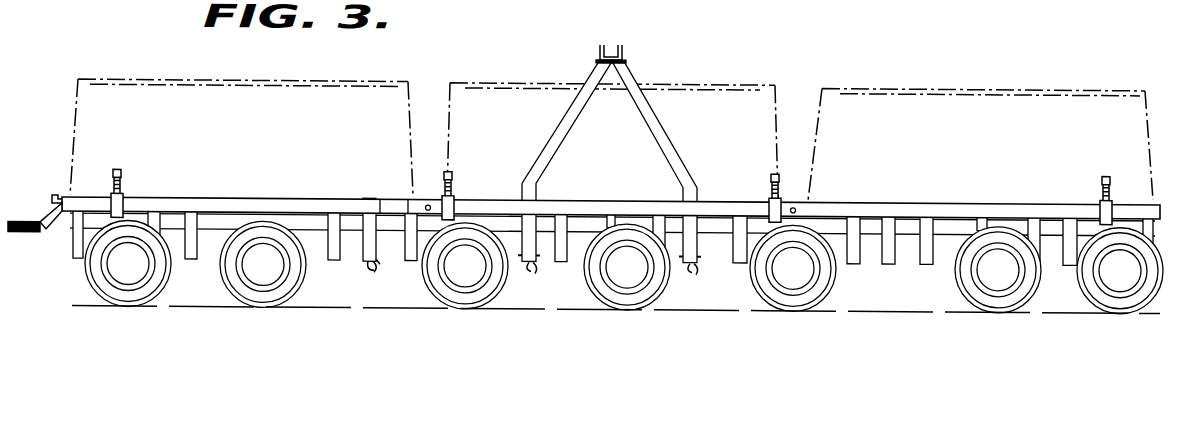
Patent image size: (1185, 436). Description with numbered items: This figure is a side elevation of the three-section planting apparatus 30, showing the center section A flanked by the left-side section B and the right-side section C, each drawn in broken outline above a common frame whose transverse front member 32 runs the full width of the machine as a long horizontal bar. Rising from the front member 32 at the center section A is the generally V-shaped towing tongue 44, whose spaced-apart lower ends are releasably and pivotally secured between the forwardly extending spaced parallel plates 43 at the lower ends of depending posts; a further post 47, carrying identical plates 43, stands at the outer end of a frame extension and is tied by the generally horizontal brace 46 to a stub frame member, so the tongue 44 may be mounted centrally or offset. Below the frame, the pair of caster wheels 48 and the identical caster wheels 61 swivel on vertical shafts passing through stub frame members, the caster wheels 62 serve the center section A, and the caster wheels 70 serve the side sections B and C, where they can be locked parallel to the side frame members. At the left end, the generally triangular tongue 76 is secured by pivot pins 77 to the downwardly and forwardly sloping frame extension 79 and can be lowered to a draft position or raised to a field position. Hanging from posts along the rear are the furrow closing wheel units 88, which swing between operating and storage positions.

The three-section planting apparatus 30 is at (1061, 72).
The transverse front member 32 is at (947, 198).
The spaced parallel plates 43 is at (688, 268).
The towing tongue 44 is at (666, 144).
The brace 46 is at (382, 196).
The post 47 is at (378, 262).
The caster wheels 48 is at (154, 284).
The caster wheels 61 is at (822, 291).
The caster wheels 62 is at (632, 313).
The caster wheels 70 is at (297, 291).
The tongue 76 is at (15, 221).
The pivot pins 77 is at (36, 234).
The frame extension 79 is at (47, 205).
The furrow closing wheel units 88 is at (1069, 259).
The center section A is at (677, 47).
The left-side section B is at (386, 59).
The right-side section C is at (936, 63).